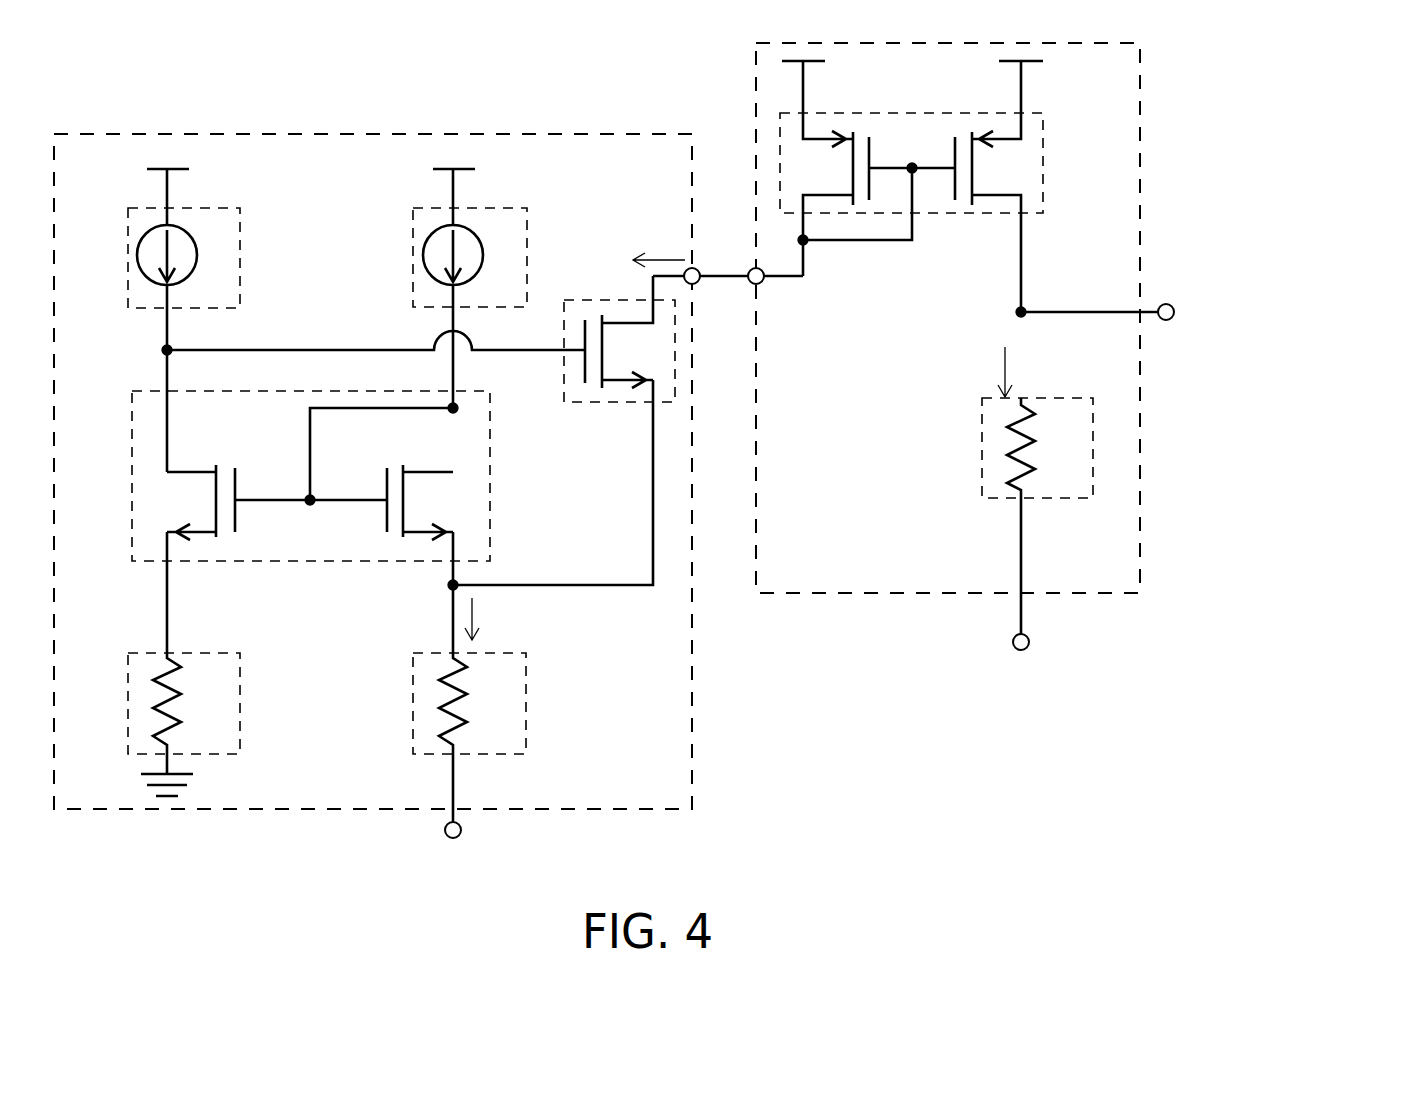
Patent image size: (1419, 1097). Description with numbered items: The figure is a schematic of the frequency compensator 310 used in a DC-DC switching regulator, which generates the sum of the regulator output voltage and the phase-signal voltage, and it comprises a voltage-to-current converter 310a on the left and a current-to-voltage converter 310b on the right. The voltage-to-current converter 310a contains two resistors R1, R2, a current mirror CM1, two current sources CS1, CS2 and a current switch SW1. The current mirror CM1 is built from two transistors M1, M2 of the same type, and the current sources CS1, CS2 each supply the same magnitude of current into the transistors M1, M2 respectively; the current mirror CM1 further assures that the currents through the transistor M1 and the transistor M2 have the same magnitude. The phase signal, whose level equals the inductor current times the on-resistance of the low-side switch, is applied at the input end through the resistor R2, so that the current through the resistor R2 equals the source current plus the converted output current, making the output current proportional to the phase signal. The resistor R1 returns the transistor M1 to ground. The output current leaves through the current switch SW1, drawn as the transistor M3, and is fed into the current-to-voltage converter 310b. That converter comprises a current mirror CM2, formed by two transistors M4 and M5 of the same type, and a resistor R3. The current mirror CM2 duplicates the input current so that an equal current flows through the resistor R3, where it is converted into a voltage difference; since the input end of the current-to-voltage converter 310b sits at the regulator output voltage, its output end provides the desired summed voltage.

The frequency compensator 310 is at (1193, 160).
The voltage-to-current converter 310a is at (692, 648).
The current-to-voltage converter 310b is at (1140, 406).
The current source CS1 is at (150, 207).
The current source CS2 is at (436, 207).
The current mirror CM1 is at (150, 390).
The current mirror CM2 is at (1043, 112).
The transistor M1 is at (158, 506).
The transistor M2 is at (465, 506).
The transistor M3 is at (652, 358).
The transistor M4 is at (799, 170).
The transistor M5 is at (1026, 172).
The current switch SW1 is at (638, 300).
The resistor R1 is at (148, 652).
The resistor R2 is at (434, 652).
The resistor R3 is at (1055, 398).